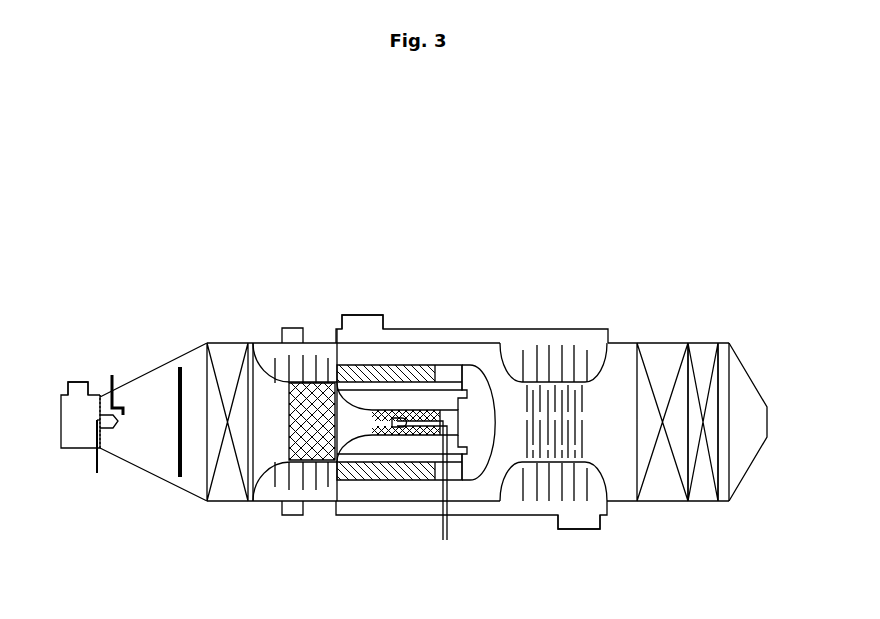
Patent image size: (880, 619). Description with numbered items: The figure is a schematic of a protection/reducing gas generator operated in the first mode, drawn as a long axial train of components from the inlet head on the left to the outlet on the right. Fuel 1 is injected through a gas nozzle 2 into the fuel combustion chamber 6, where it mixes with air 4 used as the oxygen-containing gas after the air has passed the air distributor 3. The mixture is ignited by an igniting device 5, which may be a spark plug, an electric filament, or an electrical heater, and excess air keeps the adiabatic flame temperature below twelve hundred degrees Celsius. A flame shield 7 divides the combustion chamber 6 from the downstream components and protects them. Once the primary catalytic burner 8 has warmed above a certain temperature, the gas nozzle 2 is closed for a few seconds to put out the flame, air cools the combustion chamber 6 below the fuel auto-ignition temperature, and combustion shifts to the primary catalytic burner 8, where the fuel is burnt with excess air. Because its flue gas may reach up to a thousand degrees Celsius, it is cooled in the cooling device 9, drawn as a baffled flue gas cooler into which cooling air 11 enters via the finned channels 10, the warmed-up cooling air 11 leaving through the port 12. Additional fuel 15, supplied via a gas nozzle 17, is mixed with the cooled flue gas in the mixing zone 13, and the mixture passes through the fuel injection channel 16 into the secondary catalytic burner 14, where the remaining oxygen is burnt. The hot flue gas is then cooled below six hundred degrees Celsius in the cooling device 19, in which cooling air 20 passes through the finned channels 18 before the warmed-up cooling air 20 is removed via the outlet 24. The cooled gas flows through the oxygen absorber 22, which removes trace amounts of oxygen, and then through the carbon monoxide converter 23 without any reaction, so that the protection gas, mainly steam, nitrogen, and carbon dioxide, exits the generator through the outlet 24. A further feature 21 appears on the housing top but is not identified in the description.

The fuel 1 is at (98, 475).
The gas nozzle 2 is at (113, 417).
The air distributor 3 is at (73, 440).
The oxygen-containing gas 4 is at (75, 382).
The igniting device 5 is at (114, 375).
The fuel combustion chamber 6 is at (163, 380).
The flame shield 7 is at (180, 477).
The primary catalytic burner 8 is at (233, 485).
The cooling device 9 is at (262, 502).
The finned channels 10 is at (313, 460).
The cooling air 11 is at (287, 515).
The port 12 is at (290, 328).
The mixing zone 13 is at (384, 435).
The secondary catalytic burner 14 is at (407, 480).
The additional fuel 15 is at (447, 525).
The fuel injection channel 16 is at (476, 382).
The gas nozzle 17 is at (392, 420).
The finned channels 18 is at (536, 355).
The cooling device 19 is at (562, 420).
The cooling air 20 is at (580, 529).
The top boss 21 is at (356, 315).
The oxygen absorber 22 is at (660, 493).
The carbon monoxide converter 23 is at (701, 503).
The outlet 24 is at (767, 428).